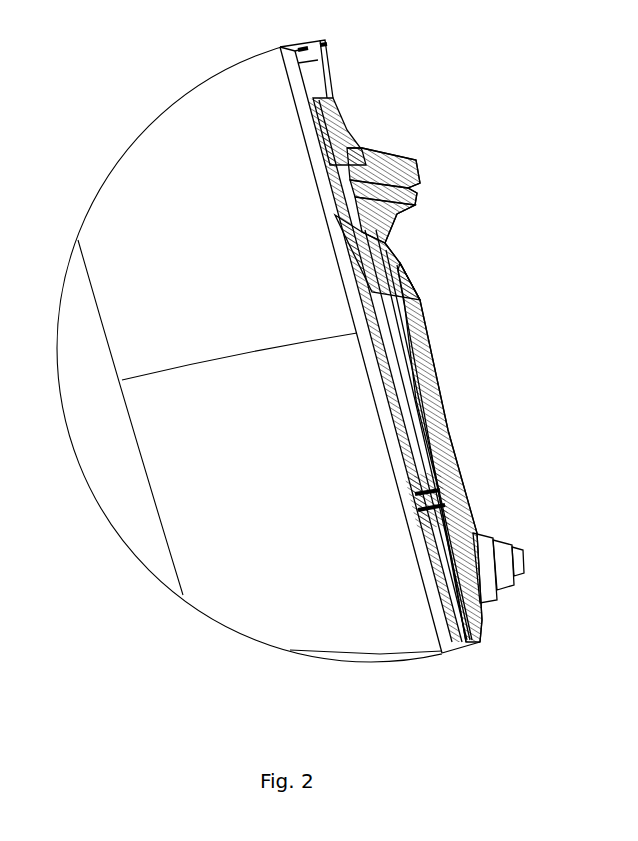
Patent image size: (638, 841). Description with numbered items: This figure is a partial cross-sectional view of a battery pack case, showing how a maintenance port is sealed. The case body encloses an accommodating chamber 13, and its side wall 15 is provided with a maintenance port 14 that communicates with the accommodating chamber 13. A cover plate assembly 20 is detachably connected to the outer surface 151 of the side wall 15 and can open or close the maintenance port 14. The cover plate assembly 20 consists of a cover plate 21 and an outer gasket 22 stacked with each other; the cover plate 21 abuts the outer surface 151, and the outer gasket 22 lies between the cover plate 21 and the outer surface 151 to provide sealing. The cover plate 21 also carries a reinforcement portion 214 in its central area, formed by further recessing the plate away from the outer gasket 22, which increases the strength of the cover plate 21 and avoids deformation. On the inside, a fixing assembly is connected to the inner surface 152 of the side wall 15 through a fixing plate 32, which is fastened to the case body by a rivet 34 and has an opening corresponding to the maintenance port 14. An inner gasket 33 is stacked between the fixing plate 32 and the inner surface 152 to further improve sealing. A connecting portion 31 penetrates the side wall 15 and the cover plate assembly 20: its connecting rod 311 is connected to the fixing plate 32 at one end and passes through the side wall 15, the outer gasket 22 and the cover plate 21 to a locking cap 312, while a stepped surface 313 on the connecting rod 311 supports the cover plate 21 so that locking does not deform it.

The accommodating chamber 13 is at (135, 202).
The maintenance port 14 is at (407, 421).
The side wall 15 is at (327, 97).
The outer surface 151 is at (328, 44).
The inner surface 152 is at (280, 50).
The cover plate assembly 20 is at (515, 478).
The cover plate 21 is at (440, 498).
The outer gasket 22 is at (462, 535).
The reinforcement portion 214 is at (435, 377).
The connecting portion 31 is at (492, 160).
The connecting rod 311 is at (422, 163).
The locking cap 312 is at (417, 196).
The stepped surface 313 is at (392, 212).
The fixing plate 32 is at (313, 152).
The inner gasket 33 is at (340, 232).
The rivet 34 is at (418, 495).